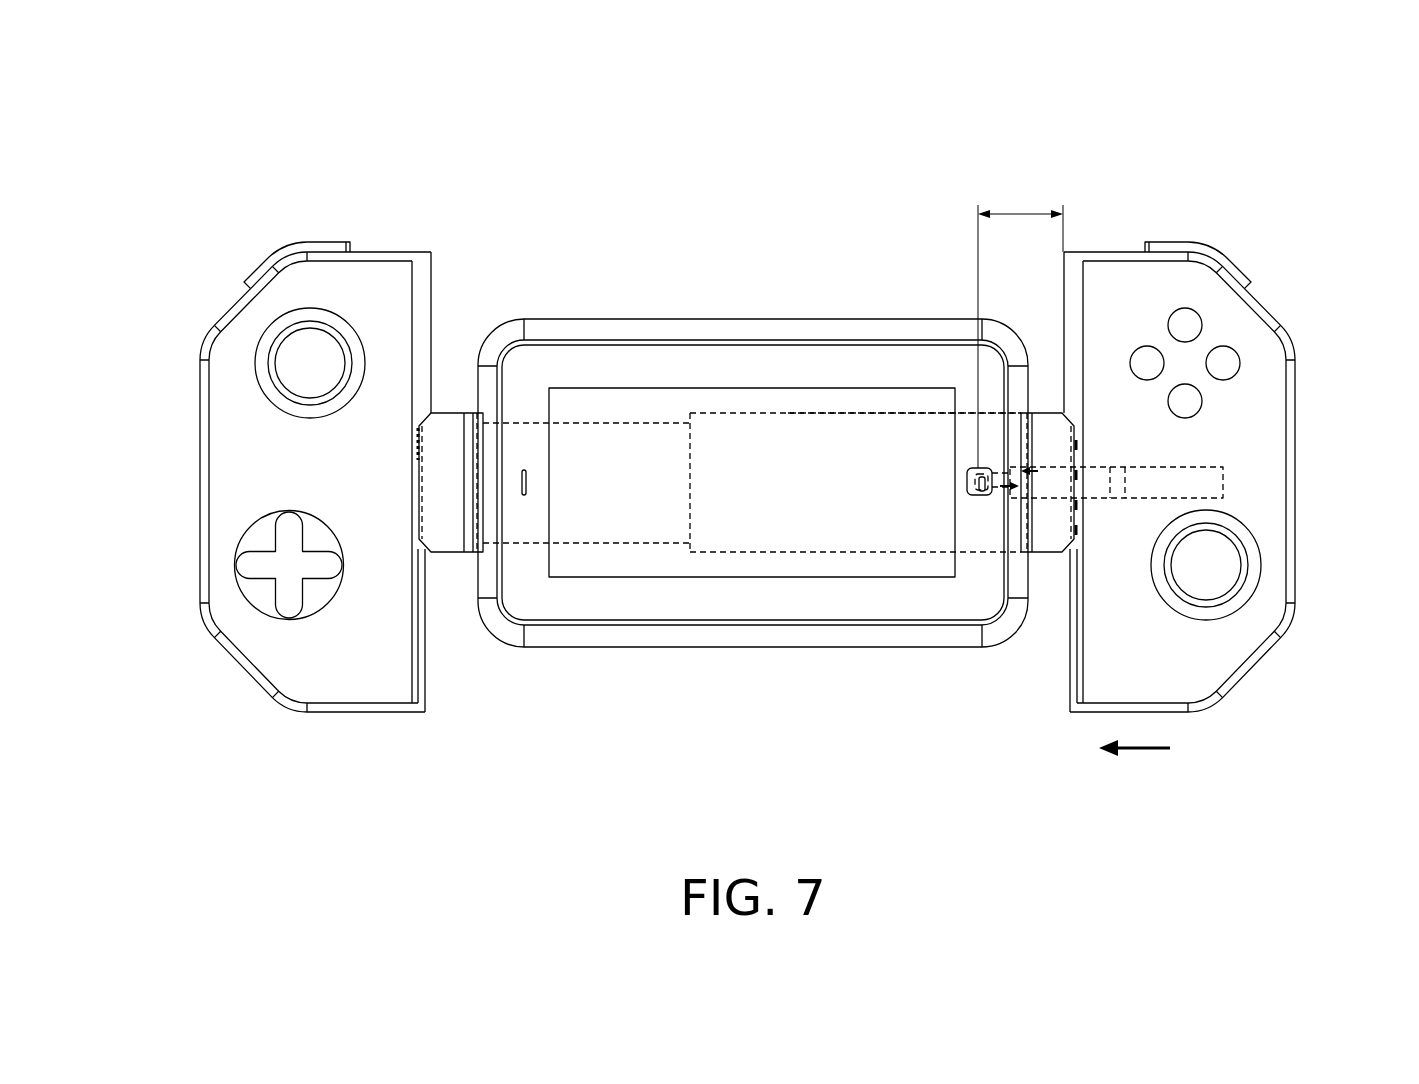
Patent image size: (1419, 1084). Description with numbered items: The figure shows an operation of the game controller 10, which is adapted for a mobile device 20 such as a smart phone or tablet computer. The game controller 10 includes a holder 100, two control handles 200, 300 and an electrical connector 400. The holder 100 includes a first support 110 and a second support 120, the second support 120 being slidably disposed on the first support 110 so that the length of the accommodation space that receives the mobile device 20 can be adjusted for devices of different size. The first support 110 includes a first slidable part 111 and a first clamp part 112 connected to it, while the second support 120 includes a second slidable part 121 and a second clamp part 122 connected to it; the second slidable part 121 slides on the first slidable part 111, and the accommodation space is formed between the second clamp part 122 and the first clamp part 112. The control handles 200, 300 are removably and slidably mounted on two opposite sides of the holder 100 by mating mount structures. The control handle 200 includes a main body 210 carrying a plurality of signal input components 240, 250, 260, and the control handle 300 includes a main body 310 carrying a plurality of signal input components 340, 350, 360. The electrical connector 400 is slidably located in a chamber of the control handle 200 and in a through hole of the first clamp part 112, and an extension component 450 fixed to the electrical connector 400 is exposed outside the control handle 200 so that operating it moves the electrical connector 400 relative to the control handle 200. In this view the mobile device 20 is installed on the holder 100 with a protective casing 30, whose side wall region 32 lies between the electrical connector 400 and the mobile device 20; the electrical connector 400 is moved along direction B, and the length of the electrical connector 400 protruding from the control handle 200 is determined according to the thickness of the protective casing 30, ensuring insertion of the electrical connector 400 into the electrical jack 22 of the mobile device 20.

The game controller 10 is at (212, 216).
The control handle 300 is at (357, 224).
The main body 310 is at (240, 330).
The signal input component 340 is at (302, 368).
The signal input component 350 is at (263, 568).
The signal input component 360 is at (287, 250).
The second clamp part 122 is at (440, 537).
The control handle 200 is at (1138, 224).
The main body 210 is at (1253, 330).
The signal input component 240 is at (1192, 320).
The signal input component 250 is at (1215, 575).
The signal input component 260 is at (1205, 250).
The first clamp part 112 is at (1042, 535).
The extension component 450 is at (1118, 467).
The protective casing 30 is at (871, 326).
The frame side wall 32 is at (1035, 507).
The mobile device 20 is at (660, 358).
The electrical jack 22 is at (1033, 510).
The holder 100 is at (800, 737).
The first support 110 is at (750, 565).
The first slidable part 111 is at (788, 515).
The second support 120 is at (656, 560).
The second slidable part 121 is at (603, 515).
The electrical connector 400 is at (985, 496).